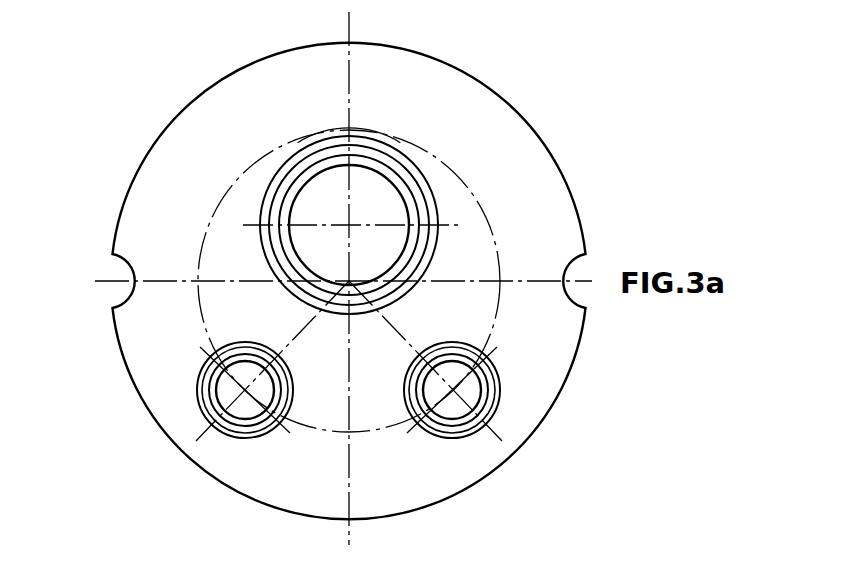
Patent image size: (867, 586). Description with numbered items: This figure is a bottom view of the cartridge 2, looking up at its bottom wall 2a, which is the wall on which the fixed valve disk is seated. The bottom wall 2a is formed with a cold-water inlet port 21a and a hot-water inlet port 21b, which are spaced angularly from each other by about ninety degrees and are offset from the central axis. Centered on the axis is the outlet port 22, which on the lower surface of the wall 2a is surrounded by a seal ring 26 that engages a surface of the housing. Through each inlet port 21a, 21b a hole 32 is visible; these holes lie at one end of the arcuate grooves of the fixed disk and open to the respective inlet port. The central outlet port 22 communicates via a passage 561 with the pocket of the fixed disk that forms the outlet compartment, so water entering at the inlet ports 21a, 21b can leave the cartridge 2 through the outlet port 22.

The cartridge 2 is at (168, 164).
The bottom wall 2a is at (210, 233).
The outlet port 22 is at (393, 175).
The passage 561 is at (395, 202).
The seal ring 26 is at (433, 213).
The cold-water inlet port 21a is at (210, 368).
The hot-water inlet port 21b is at (487, 380).
The hole 32 is at (225, 388).